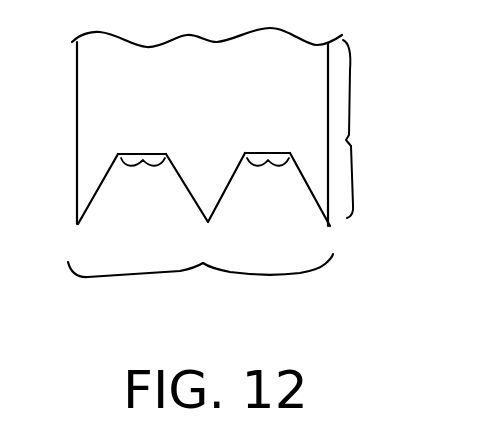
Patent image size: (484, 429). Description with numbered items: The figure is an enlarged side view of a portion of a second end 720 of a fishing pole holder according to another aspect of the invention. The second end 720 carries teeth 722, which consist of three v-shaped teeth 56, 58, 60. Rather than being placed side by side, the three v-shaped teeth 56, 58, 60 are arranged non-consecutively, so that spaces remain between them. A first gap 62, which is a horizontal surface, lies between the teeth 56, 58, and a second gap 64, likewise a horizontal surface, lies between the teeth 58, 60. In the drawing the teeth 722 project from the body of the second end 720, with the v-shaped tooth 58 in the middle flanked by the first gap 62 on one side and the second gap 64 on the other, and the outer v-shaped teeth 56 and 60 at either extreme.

The v-shaped tooth 56 is at (68, 243).
The v-shaped tooth 58 is at (218, 232).
The v-shaped tooth 60 is at (342, 234).
The first gap 62 is at (143, 161).
The second gap 64 is at (268, 161).
The second end 720 is at (346, 140).
The teeth 722 is at (203, 264).